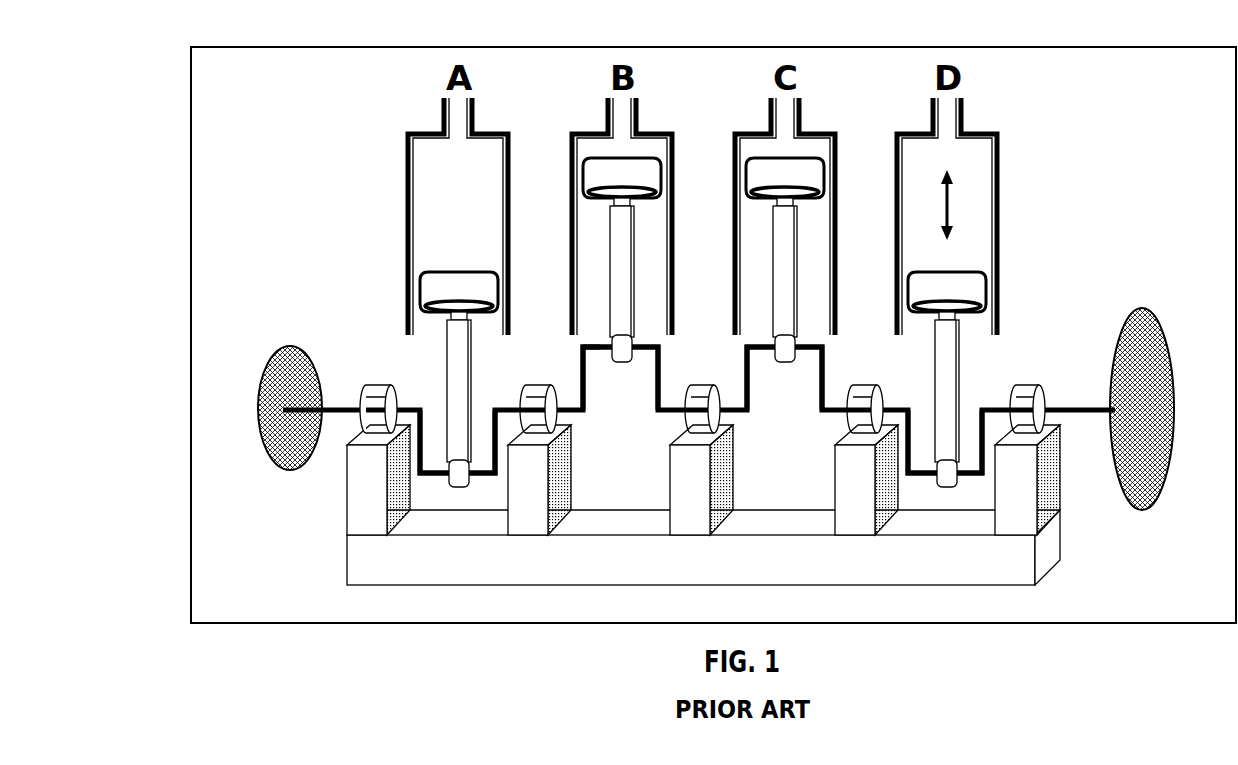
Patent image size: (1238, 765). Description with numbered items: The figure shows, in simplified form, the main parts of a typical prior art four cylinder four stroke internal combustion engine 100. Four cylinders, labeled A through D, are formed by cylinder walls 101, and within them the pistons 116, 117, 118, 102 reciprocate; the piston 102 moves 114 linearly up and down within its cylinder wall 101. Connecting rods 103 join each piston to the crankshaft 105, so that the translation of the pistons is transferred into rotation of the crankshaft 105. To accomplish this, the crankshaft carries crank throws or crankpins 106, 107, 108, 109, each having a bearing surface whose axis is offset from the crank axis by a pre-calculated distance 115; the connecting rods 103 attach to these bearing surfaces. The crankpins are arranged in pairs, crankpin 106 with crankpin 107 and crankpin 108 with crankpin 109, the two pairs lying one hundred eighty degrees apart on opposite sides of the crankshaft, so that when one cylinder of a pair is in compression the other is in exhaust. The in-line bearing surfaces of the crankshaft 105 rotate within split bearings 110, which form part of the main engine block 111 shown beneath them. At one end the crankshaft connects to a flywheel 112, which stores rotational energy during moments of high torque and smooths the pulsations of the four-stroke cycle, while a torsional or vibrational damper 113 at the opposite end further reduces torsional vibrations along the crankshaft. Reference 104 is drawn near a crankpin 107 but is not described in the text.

The four cycle internal combustion engine 100 is at (180, 132).
The cylinder 101 is at (397, 185).
The piston 102 is at (973, 290).
The connecting rod 103 is at (960, 372).
The crank pin 104 is at (942, 487).
The crankshaft 105 is at (337, 414).
The crankpin 106 is at (486, 478).
The crankpin 107 is at (970, 478).
The crankpin 108 is at (648, 352).
The crankpin 109 is at (808, 352).
The split bearing 110 is at (372, 372).
The engine block 111 is at (1047, 500).
The flywheel 112 is at (1158, 310).
The torsional or vibrational damper 113 is at (284, 476).
The linear motion of piston 114 is at (958, 212).
The pre-calculated distance 115 is at (583, 376).
The piston 116 is at (456, 286).
The piston 117 is at (607, 170).
The piston 118 is at (787, 170).